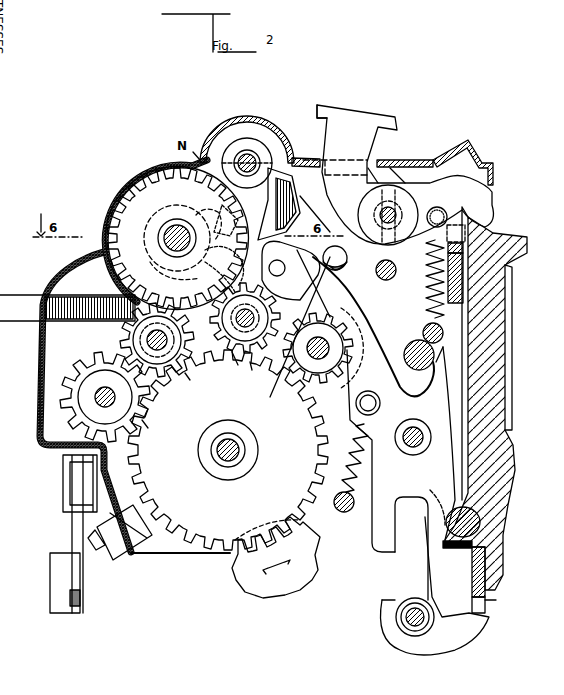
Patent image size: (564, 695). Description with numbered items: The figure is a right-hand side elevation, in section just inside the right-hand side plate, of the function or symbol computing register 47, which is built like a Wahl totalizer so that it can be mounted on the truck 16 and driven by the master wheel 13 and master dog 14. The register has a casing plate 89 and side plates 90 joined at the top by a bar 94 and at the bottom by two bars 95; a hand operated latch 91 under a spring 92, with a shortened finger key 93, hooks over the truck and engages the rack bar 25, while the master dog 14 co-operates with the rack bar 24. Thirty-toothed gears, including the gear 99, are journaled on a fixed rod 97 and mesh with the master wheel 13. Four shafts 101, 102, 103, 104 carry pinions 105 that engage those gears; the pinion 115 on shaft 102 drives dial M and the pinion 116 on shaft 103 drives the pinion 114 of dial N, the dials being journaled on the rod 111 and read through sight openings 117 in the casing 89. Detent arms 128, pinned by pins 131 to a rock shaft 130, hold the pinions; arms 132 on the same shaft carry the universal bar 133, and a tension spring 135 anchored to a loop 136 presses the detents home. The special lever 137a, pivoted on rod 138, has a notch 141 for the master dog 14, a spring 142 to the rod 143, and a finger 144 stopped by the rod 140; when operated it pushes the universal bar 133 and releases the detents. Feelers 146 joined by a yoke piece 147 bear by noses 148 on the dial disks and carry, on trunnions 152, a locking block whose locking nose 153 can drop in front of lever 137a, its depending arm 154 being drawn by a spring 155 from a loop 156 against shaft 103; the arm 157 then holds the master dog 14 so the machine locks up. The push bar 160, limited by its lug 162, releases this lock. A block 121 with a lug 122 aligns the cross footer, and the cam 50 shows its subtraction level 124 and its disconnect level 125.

The master wheel 13 is at (250, 590).
The master dog 14 is at (390, 606).
The truck 16 is at (500, 236).
The rack bar 24 is at (498, 600).
The rack bar 25 is at (436, 322).
The function or symbol computing register 47 is at (24, 380).
The cam 50 is at (70, 529).
The casing plate 89 is at (63, 276).
The side plates 90 is at (175, 553).
The hand operated latch 91 is at (465, 184).
The spring 92 is at (430, 252).
The finger key 93 is at (388, 122).
The bar 94 is at (400, 162).
The bars 95 is at (135, 550).
The fixed rod 97 is at (236, 462).
The gear 99 is at (176, 528).
The shaft 101 is at (105, 397).
The shaft 102 is at (133, 338).
The shaft 103 is at (224, 322).
The shaft 104 is at (323, 348).
The pinions 105 is at (230, 390).
The shaft or rod 111 is at (167, 234).
The pinion 114 is at (175, 163).
The pinion 115 is at (192, 383).
The pinion 116 is at (252, 372).
The sight openings 117 is at (130, 180).
The block 121 is at (452, 508).
The lug 122 is at (455, 549).
The level 124 is at (70, 613).
The level 125 is at (81, 601).
The arms 128 is at (292, 182).
The rock shaft 130 is at (248, 155).
The pins 131 is at (222, 140).
The arms 132 is at (322, 197).
The universal bar 133 is at (358, 266).
The tension spring 135 is at (228, 218).
The loop 136 is at (203, 216).
The lever 137a is at (356, 304).
The rod 138 is at (420, 431).
The rod 140 is at (417, 341).
The notch 141 is at (406, 509).
The spring 142 is at (368, 465).
The rod 143 is at (353, 497).
The finger 144 is at (445, 377).
The feeler 146 is at (296, 246).
The yoke piece 147 is at (296, 198).
The nose 148 is at (224, 263).
The trunnions 152 is at (283, 258).
The locking nose 153 is at (300, 256).
The depending arm 154 is at (272, 394).
The spring 155 is at (215, 277).
The loop 156 is at (175, 271).
The arm 157 is at (433, 555).
The key or push bar 160 is at (27, 316).
The lug 162 is at (60, 322).